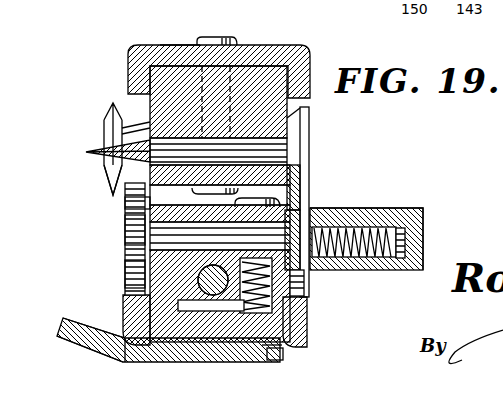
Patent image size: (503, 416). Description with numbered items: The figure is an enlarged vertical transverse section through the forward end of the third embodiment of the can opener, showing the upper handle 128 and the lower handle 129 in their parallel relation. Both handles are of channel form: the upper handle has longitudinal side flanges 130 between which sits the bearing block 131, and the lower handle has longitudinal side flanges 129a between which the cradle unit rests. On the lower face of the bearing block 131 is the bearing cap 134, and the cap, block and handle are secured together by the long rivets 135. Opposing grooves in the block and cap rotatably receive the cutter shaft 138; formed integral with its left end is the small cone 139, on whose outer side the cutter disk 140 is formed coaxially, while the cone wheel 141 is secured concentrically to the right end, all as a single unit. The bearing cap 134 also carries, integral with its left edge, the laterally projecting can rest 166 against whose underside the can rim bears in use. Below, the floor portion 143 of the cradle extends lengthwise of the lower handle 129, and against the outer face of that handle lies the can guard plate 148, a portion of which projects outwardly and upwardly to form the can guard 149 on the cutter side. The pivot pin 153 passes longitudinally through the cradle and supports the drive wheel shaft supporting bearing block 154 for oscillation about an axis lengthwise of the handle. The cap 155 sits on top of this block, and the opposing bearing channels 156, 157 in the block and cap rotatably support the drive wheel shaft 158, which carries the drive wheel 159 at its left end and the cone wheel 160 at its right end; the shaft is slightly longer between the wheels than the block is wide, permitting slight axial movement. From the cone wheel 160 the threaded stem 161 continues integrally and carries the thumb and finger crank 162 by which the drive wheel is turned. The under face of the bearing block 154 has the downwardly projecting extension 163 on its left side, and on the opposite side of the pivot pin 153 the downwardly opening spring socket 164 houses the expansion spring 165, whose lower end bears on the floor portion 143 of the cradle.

The upper handle 128 is at (166, 42).
The lower handle 129 is at (165, 340).
The longitudinal side flanges 129a is at (125, 317).
The longitudinal side flanges 130 is at (312, 72).
The bearing block 131 is at (265, 70).
The bearing cap 134 is at (153, 187).
The long rivets 135 is at (215, 37).
The cutter shaft 138 is at (262, 153).
The small cone 139 is at (110, 168).
The cutter disk 140 is at (108, 125).
The cone wheel 141 is at (300, 163).
The floor portion 143 is at (307, 332).
The can guard plate 148 is at (283, 356).
The can guard 149 is at (63, 320).
The pivot pin 153 is at (123, 303).
The drive wheel shaft supporting bearing block 154 is at (125, 285).
The cap 155 is at (147, 206).
The bearing channel 156 is at (127, 265).
The bearing channel 157 is at (292, 215).
The drive wheel shaft 158 is at (302, 280).
The drive wheel 159 is at (135, 228).
The cone wheel 160 is at (340, 210).
The threaded stem 161 is at (405, 240).
The thumb and finger crank 162 is at (410, 210).
The downwardly projecting extension 163 is at (205, 340).
The spring socket 164 is at (262, 345).
The expansion spring 165 is at (272, 358).
The can rest 166 is at (92, 146).